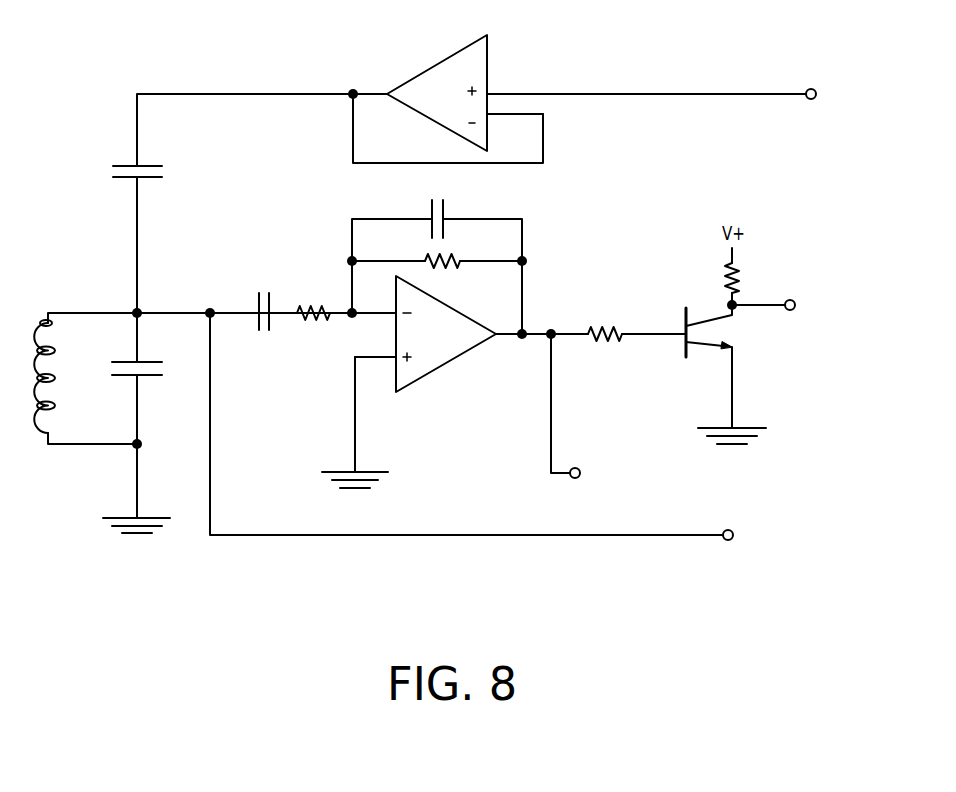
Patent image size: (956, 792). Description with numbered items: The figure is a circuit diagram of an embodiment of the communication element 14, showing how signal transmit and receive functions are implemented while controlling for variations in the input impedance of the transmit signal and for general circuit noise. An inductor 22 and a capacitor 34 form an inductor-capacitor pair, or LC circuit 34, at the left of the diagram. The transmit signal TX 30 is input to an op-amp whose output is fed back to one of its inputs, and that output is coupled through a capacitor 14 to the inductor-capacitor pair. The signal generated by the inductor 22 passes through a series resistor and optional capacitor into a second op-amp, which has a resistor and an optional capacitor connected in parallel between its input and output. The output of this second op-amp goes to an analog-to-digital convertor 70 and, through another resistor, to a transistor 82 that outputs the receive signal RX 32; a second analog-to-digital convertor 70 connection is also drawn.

The capacitor 14 is at (92, 136).
The inductor 22 is at (55, 388).
The transmit input 30 is at (838, 113).
The receive input 32 is at (812, 322).
The capacitor 34 is at (153, 375).
The analog-to-digital convertor 70 is at (648, 480).
The transistor 82 is at (686, 351).